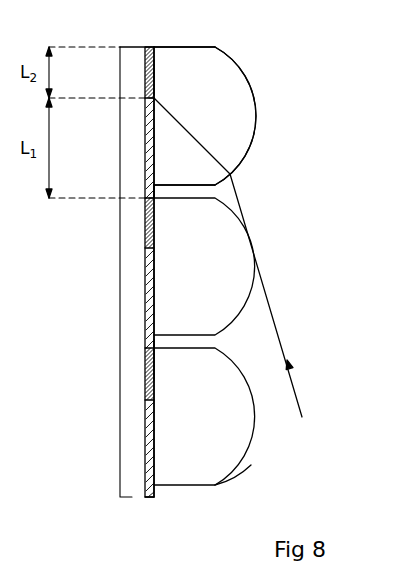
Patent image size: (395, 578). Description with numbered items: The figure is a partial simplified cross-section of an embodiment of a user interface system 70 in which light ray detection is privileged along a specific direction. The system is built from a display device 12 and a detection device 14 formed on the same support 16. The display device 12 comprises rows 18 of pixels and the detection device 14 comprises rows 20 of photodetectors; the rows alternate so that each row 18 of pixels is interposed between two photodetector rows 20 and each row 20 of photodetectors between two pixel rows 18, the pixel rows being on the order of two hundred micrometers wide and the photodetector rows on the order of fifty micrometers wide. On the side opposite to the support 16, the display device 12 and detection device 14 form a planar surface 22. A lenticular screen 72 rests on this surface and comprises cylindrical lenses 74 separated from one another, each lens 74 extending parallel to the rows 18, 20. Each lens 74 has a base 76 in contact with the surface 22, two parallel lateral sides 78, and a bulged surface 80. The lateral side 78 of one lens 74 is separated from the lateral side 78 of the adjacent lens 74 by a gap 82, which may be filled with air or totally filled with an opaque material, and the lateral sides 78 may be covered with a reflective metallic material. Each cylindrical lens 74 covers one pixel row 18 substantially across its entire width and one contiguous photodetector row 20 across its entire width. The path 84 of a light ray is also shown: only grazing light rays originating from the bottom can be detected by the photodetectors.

The display device 12 is at (142, 424).
The detection device 14 is at (142, 362).
The support 16 is at (132, 494).
The row of pixels 18 is at (148, 145).
The row of photodetectors 20 is at (146, 77).
The planar surface 22 is at (152, 498).
The user interface system 70 is at (340, 70).
The lenticular screen 72 is at (236, 477).
The cylindrical lens 74 is at (217, 120).
The base 76 is at (155, 88).
The lateral side 78 is at (206, 46).
The bulged surface 80 is at (253, 137).
The gap 82 is at (167, 191).
The path of a light ray 84 is at (298, 393).